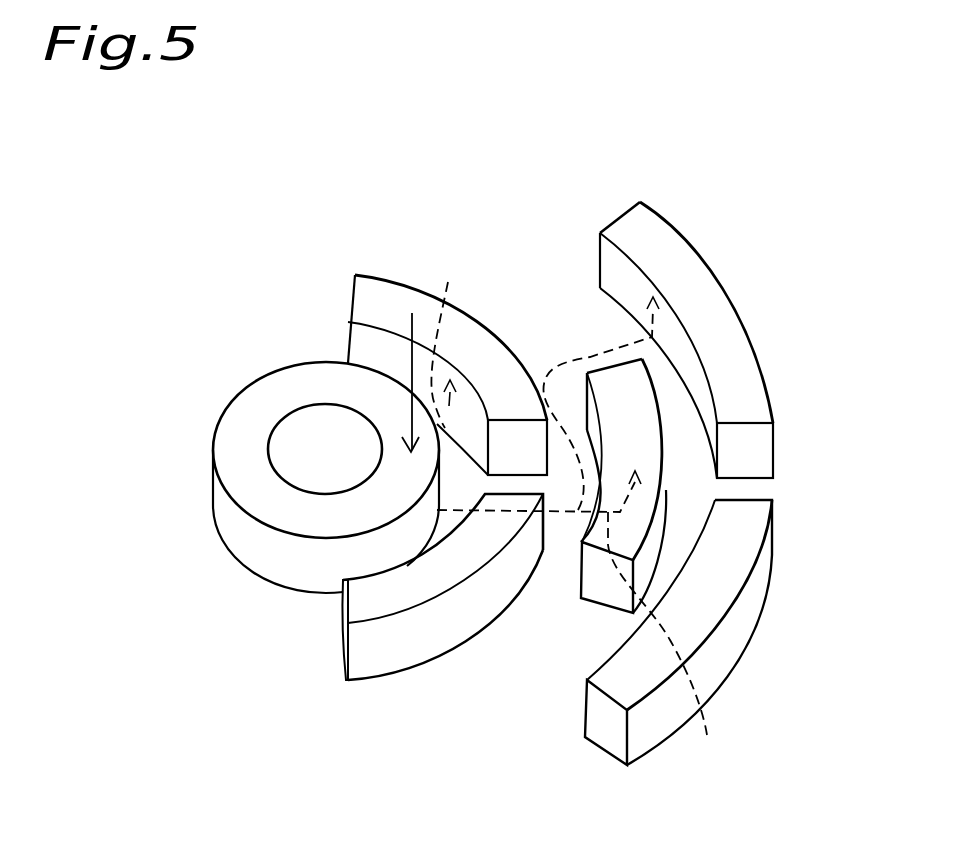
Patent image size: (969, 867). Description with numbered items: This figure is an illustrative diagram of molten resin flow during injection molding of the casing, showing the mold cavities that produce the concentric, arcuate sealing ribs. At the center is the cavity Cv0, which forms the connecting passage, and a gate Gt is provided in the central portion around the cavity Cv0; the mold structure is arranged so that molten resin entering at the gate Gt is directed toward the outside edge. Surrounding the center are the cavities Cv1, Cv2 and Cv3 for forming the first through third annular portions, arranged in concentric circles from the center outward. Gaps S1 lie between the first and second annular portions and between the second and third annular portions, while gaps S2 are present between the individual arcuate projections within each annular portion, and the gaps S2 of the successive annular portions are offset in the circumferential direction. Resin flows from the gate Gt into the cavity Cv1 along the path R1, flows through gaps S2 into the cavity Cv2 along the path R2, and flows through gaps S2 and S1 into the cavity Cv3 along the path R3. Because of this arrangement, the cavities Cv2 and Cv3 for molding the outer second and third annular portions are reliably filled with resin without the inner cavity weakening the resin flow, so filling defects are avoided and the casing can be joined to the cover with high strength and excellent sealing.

The cavity Cv0 is at (223, 520).
The cavity Cv1 is at (373, 303).
The cavity Cv2 is at (643, 443).
The cavity Cv3 is at (683, 258).
The gate Gt is at (412, 345).
The gaps S1 is at (525, 327).
The gaps S2 is at (520, 485).
The path R1 is at (450, 336).
The path R2 is at (586, 625).
The path R3 is at (577, 360).